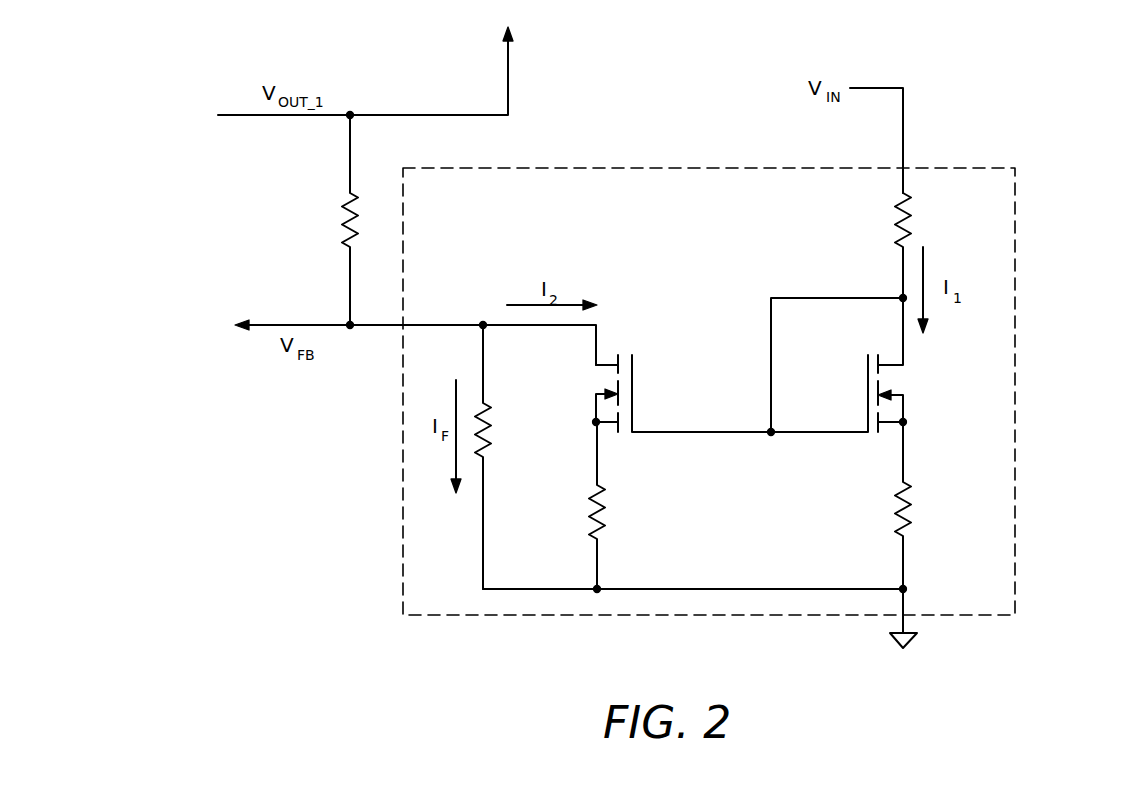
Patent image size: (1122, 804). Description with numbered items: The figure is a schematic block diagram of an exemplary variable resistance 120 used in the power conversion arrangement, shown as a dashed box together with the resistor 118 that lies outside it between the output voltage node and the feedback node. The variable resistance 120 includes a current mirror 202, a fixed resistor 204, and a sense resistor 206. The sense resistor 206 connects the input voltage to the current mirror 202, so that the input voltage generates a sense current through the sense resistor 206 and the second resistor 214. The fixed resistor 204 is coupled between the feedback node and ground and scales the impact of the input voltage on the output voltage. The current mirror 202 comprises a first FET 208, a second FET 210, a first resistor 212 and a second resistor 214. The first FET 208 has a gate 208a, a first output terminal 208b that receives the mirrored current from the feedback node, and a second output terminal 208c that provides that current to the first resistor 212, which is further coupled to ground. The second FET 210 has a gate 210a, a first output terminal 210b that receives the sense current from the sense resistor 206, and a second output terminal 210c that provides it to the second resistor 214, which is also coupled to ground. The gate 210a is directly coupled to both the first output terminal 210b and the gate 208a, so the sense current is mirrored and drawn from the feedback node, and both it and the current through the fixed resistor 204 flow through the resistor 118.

The resistor 118 is at (340, 220).
The variable resistance 120 is at (1015, 225).
The current mirror 202 is at (772, 254).
The fixed resistor 204 is at (490, 442).
The sense resistor 206 is at (900, 242).
The first FET 208 is at (634, 340).
The gate of first FET 208a is at (634, 426).
The first output terminal of first FET 208b is at (597, 365).
The second output terminal of first FET 208c is at (596, 422).
The second FET 210 is at (876, 410).
The gate of second FET 210a is at (867, 423).
The first output terminal of second FET 210b is at (906, 364).
The second output terminal of second FET 210c is at (907, 422).
The first resistor 212 is at (603, 523).
The second resistor 214 is at (900, 532).